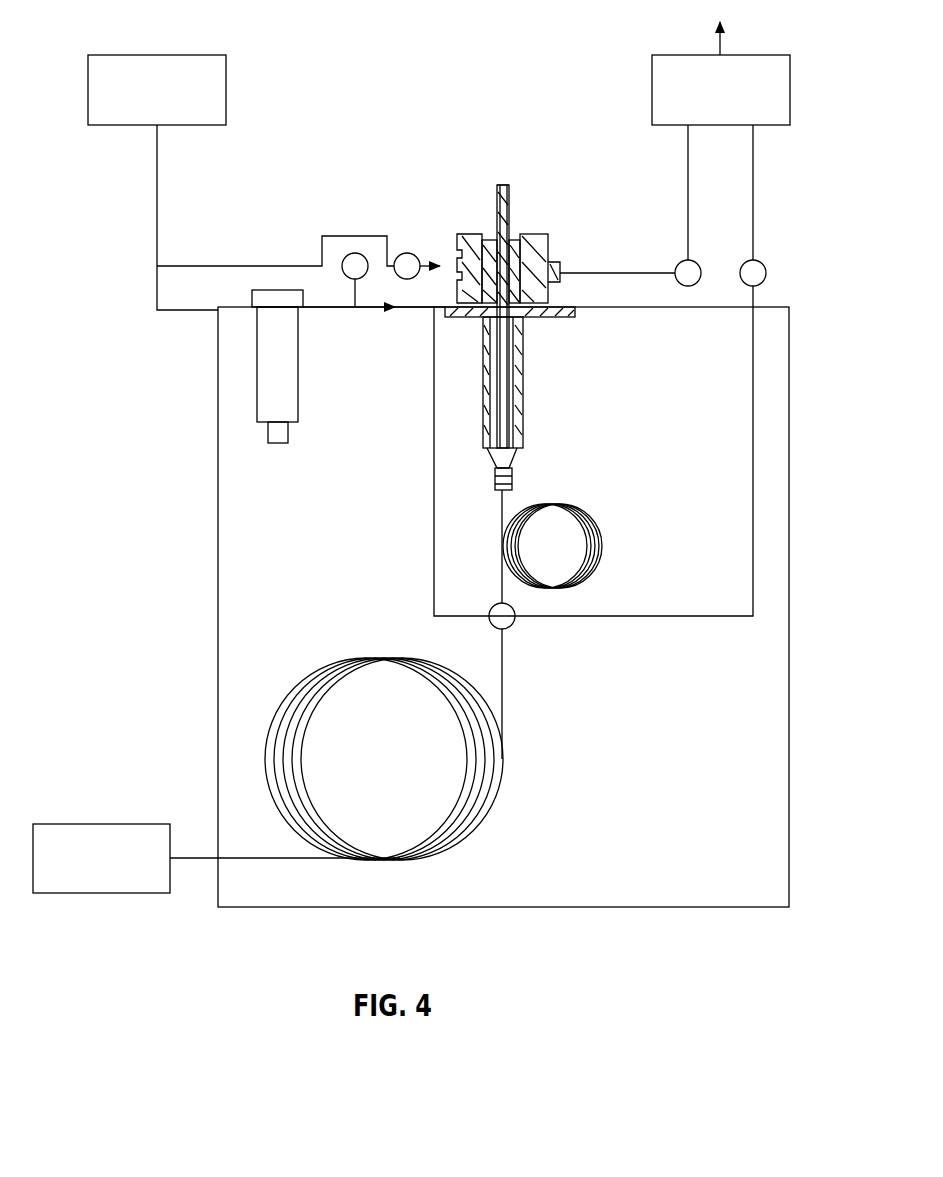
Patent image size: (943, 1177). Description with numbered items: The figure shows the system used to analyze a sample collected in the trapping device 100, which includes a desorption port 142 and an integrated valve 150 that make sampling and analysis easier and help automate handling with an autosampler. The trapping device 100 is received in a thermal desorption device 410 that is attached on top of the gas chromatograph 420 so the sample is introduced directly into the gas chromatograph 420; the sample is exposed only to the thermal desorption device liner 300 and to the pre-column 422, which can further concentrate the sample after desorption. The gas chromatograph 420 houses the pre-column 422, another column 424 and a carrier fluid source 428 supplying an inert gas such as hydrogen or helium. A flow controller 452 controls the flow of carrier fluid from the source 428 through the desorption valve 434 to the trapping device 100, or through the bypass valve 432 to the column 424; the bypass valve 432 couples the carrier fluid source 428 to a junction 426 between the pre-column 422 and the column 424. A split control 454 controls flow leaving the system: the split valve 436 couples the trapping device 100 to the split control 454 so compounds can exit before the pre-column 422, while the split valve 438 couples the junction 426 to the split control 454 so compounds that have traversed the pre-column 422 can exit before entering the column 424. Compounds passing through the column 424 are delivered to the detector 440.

The trapping device 100 is at (508, 222).
The desorption port 142 is at (464, 240).
The integrated valve 150 is at (496, 194).
The thermal desorption device liner 300 is at (518, 475).
The thermal desorption device 410 is at (572, 222).
The gas chromatograph 420 is at (218, 560).
The pre-column 422 is at (592, 512).
The column 424 is at (316, 674).
The junction 426 is at (514, 626).
The carrier fluid source 428 is at (300, 360).
The bypass valve 432 is at (352, 253).
The desorption valve 434 is at (404, 253).
The split valve 436 is at (678, 264).
The split valve 438 is at (763, 264).
The detector 440 is at (101, 823).
The flow controller 452 is at (158, 55).
The split control 454 is at (722, 55).